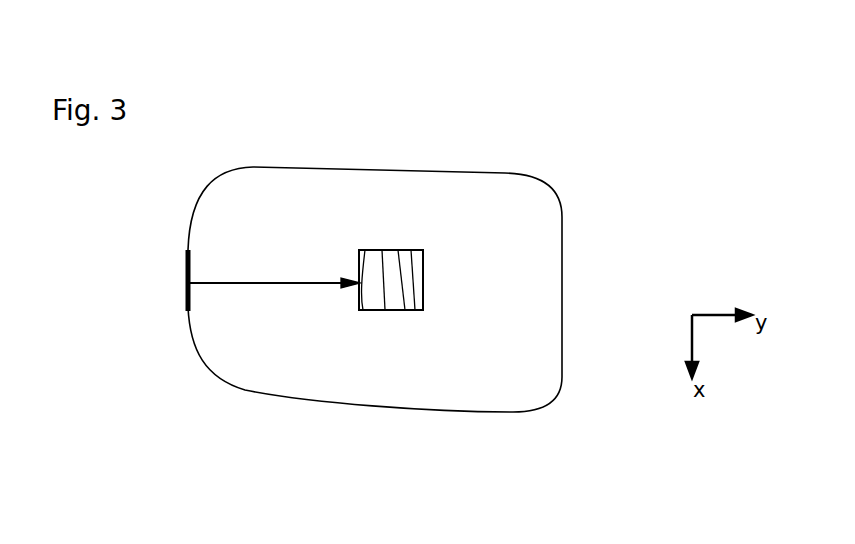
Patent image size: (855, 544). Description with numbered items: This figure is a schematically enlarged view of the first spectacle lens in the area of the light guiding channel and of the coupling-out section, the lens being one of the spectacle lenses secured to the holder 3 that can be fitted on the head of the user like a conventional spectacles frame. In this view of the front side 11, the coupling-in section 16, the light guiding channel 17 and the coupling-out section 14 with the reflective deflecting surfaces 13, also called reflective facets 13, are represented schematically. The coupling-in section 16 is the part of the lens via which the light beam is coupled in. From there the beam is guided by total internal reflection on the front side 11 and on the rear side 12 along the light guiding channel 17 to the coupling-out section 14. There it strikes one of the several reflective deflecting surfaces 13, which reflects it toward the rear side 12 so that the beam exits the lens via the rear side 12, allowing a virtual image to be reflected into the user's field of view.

The holder 3 is at (550, 253).
The front side 11 is at (249, 207).
The rear side 12 is at (423, 293).
The reflective deflecting surfaces 13 is at (365, 250).
The coupling-out section 14 is at (412, 312).
The coupling-in section 16 is at (188, 308).
The light guiding channel 17 is at (290, 283).